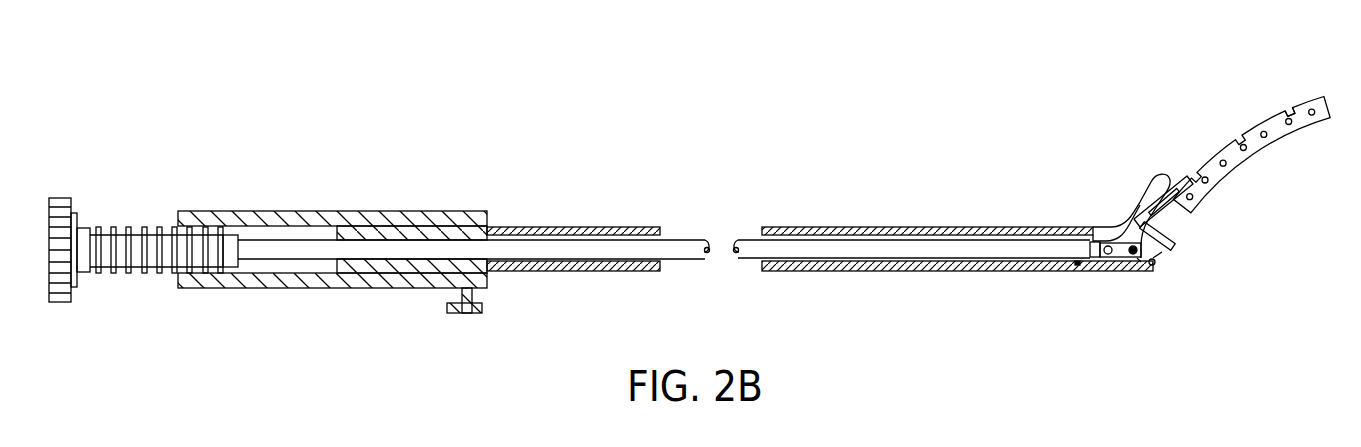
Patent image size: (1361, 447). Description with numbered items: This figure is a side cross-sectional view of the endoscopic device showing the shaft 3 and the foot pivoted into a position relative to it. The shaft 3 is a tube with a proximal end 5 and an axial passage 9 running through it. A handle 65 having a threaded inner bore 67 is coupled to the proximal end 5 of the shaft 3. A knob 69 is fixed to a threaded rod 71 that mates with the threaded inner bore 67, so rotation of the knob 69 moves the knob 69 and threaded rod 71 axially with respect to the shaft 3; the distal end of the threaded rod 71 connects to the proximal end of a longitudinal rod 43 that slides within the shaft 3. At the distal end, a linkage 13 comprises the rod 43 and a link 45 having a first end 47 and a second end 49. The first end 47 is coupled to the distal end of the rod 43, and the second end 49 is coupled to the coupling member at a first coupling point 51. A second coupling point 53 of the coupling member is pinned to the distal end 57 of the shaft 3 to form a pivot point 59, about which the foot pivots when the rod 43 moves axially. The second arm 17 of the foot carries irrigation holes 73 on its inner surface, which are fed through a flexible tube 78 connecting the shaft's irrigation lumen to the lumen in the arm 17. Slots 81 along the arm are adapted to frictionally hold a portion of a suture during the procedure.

The handle 65 is at (310, 158).
The knob 69 is at (65, 198).
The threaded rod 71 is at (148, 228).
The threaded inner bore 67 is at (303, 237).
The proximal end 5 is at (488, 233).
The axial passage 9 is at (648, 272).
The longitudinal rod 43 is at (638, 227).
The shaft 3 is at (890, 227).
The linkage 13 is at (1097, 265).
The first end 47 is at (1107, 246).
The link 45 is at (1132, 246).
The flexible tube 78 is at (1157, 168).
The first coupling point 51 is at (1165, 185).
The second coupling point 53 is at (1156, 258).
The second end 49 is at (1137, 263).
The distal end 57 is at (1155, 267).
The pivot point 59 is at (1158, 268).
The second arm 17 is at (1222, 145).
The irrigation holes 73 is at (1264, 131).
The slots 81 is at (1286, 110).